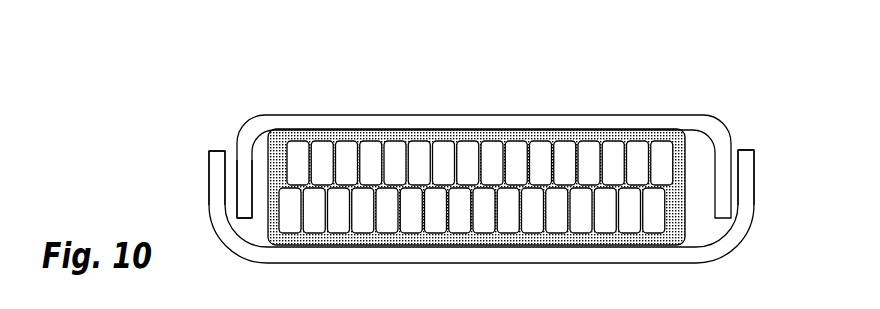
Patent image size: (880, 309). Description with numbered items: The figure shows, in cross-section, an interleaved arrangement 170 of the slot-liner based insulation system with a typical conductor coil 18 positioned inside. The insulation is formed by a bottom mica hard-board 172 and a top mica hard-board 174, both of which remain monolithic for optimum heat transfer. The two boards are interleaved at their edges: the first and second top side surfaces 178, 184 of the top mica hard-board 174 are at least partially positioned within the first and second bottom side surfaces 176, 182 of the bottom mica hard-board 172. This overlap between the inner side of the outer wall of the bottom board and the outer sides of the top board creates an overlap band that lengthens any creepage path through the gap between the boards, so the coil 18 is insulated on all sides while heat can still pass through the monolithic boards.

The interleaved arrangement 170 is at (238, 84).
The bottom mica hard-board 172 is at (632, 264).
The top mica hard-board 174 is at (530, 113).
The first bottom side surface 176 is at (210, 166).
The first top side surface 178 is at (256, 205).
The second bottom side surface 182 is at (757, 168).
The second top side surface 184 is at (713, 168).
The conductor coil 18 is at (684, 232).